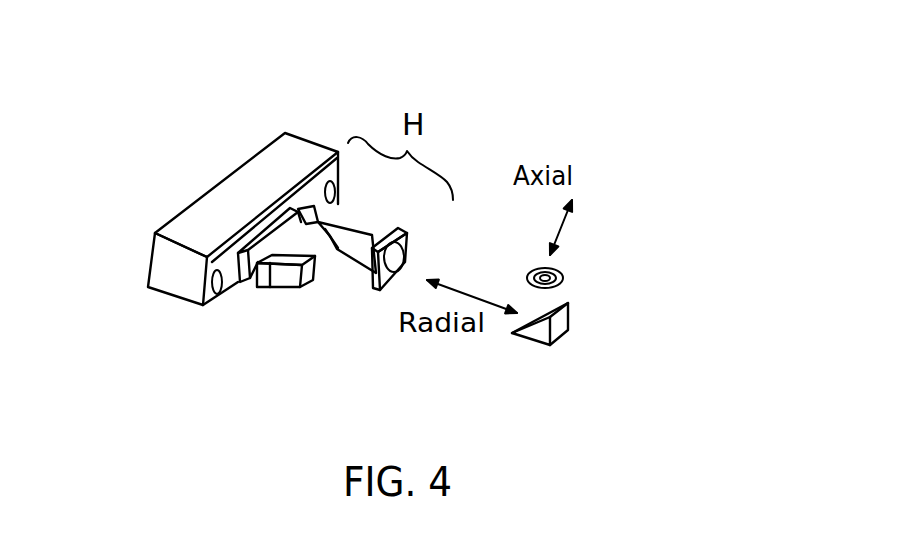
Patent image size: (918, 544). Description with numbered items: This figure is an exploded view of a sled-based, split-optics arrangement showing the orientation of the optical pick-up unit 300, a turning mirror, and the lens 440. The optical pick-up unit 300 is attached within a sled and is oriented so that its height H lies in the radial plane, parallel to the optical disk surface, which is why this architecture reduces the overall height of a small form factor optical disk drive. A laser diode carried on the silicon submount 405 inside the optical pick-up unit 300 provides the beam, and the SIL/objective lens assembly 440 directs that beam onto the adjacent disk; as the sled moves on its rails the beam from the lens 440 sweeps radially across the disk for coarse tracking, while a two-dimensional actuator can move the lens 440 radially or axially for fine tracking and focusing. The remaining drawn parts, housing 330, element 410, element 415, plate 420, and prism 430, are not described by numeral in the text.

The optical pick-up unit 300 is at (287, 296).
The housing 330 is at (282, 146).
The silicon submount 405 is at (240, 283).
The tip 410 is at (318, 222).
The block 415 is at (328, 262).
The plate 420 is at (404, 257).
The prism 430 is at (572, 310).
The lens 440 is at (557, 265).